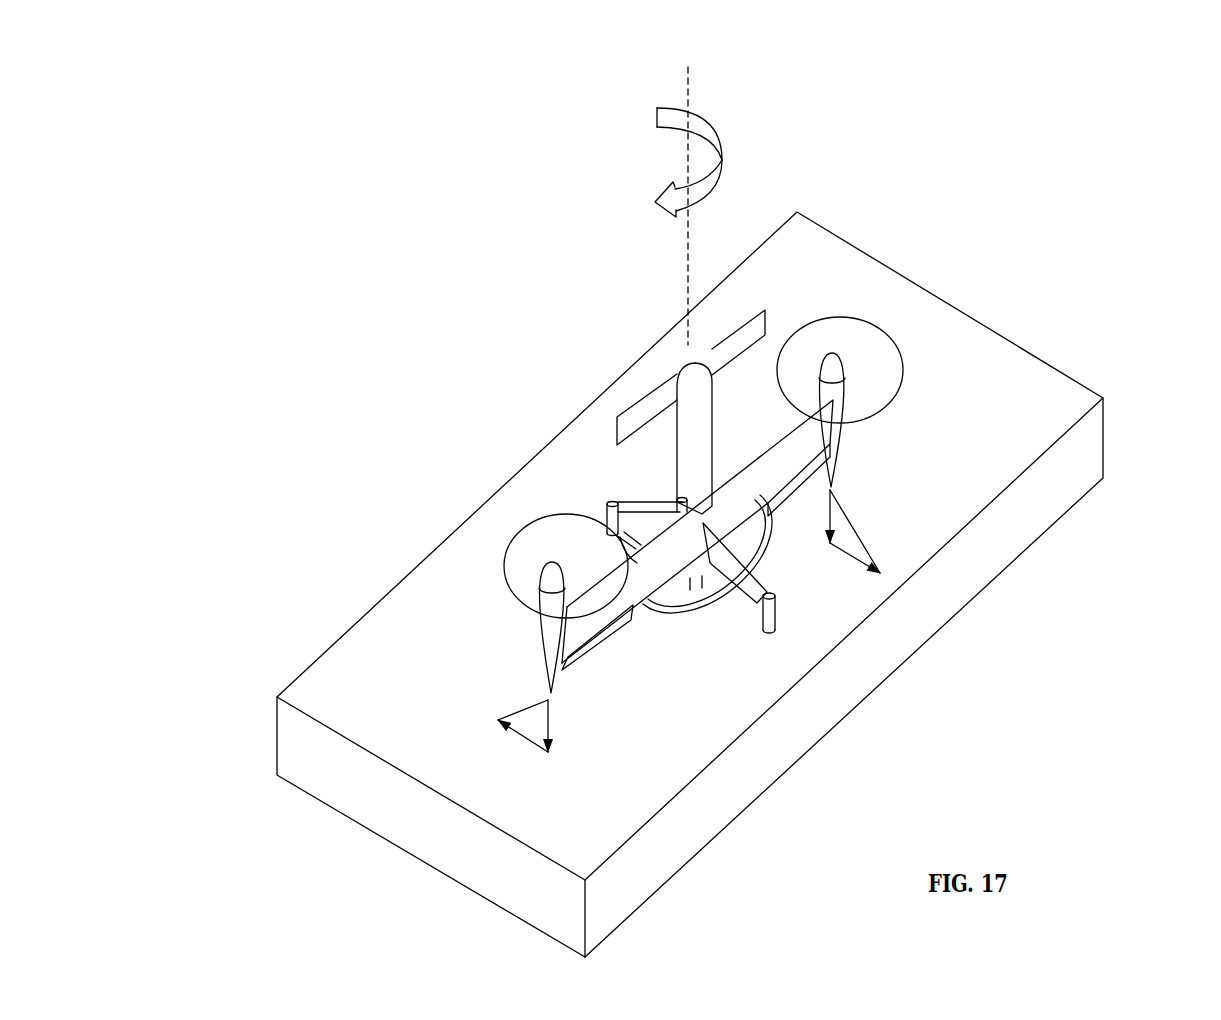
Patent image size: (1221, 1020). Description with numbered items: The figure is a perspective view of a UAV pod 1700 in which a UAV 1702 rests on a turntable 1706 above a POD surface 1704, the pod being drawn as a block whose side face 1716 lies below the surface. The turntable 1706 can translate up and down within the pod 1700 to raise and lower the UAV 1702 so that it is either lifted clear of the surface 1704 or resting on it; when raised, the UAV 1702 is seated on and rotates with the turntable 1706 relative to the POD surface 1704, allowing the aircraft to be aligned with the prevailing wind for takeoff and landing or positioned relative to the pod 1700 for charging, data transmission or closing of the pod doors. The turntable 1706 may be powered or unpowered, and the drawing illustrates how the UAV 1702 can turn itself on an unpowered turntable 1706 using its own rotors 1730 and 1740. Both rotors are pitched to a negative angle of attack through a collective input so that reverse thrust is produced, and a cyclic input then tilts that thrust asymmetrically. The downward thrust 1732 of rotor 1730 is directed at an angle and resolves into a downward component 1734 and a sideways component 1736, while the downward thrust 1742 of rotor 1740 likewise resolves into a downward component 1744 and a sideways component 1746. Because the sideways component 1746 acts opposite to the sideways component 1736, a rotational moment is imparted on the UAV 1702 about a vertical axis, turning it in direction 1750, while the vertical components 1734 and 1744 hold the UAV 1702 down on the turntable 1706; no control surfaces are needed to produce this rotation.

The UAV pod 1700 is at (282, 823).
The UAV 1702 is at (693, 397).
The POD surface 1704 is at (690, 584).
The turntable 1706 is at (710, 590).
The platform side face 1716 is at (431, 827).
The rotor 1730 is at (517, 525).
The downward thrust 1732 is at (535, 703).
The downward component 1734 is at (553, 722).
The sideways component 1736 is at (510, 727).
The rotor 1740 is at (903, 393).
The downward thrust 1742 is at (842, 557).
The downward component 1744 is at (828, 515).
The sideways component 1746 is at (842, 557).
The direction of turn 1750 is at (688, 192).